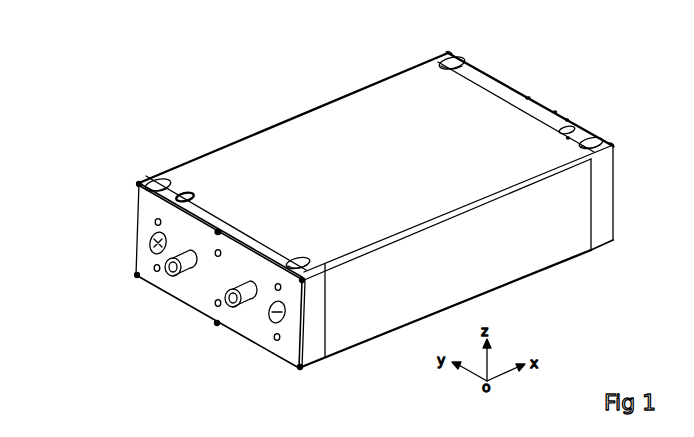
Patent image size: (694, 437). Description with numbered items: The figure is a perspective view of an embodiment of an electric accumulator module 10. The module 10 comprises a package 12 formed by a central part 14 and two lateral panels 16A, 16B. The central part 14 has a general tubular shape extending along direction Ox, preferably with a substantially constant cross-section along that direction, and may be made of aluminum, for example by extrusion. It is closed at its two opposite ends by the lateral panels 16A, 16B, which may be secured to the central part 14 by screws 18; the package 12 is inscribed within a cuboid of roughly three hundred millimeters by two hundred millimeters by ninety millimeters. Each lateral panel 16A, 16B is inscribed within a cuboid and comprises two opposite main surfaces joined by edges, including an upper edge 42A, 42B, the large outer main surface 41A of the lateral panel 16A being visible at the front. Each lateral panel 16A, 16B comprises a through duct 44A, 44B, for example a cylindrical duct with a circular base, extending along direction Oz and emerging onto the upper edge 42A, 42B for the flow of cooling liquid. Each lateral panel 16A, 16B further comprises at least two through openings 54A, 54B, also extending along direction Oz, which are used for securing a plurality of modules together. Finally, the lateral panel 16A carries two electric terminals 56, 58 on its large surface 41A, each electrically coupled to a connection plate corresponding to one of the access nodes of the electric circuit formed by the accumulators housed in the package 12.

The electric accumulator module 10 is at (360, 214).
The package 12 is at (376, 232).
The central part 14 is at (392, 97).
The lateral panel 16A is at (240, 289).
The lateral panel 16B is at (603, 243).
The screws 18 is at (301, 371).
The main surface 41A is at (264, 343).
The upper edge 42A is at (185, 188).
The upper edge 42B is at (549, 84).
The through duct 44A is at (186, 192).
The through duct 44B is at (569, 128).
The through openings 54A is at (146, 182).
The through openings 54B is at (457, 62).
The electric terminal 56 is at (187, 273).
The electric terminal 58 is at (247, 310).